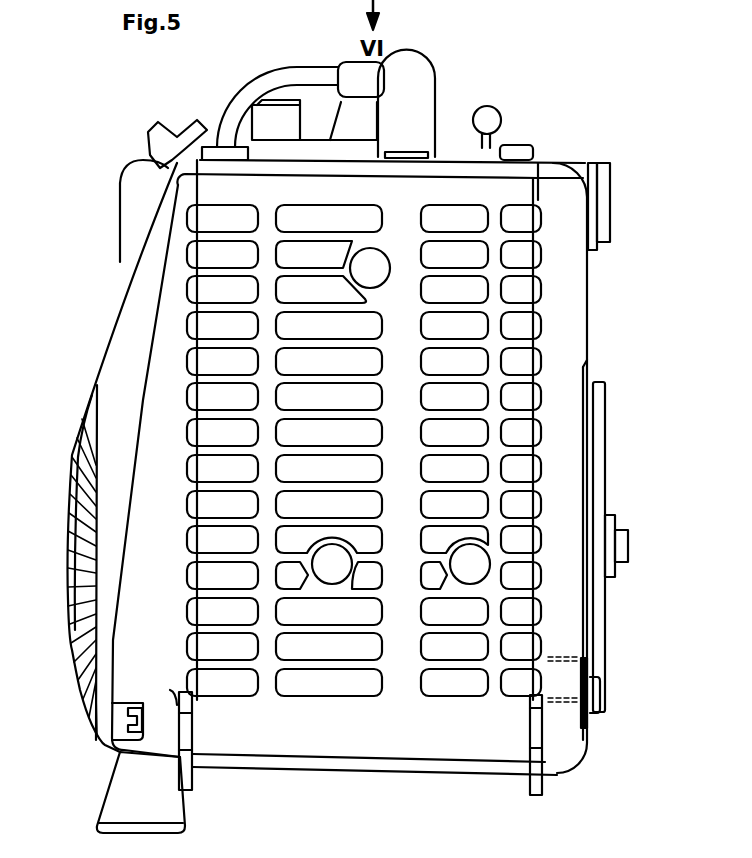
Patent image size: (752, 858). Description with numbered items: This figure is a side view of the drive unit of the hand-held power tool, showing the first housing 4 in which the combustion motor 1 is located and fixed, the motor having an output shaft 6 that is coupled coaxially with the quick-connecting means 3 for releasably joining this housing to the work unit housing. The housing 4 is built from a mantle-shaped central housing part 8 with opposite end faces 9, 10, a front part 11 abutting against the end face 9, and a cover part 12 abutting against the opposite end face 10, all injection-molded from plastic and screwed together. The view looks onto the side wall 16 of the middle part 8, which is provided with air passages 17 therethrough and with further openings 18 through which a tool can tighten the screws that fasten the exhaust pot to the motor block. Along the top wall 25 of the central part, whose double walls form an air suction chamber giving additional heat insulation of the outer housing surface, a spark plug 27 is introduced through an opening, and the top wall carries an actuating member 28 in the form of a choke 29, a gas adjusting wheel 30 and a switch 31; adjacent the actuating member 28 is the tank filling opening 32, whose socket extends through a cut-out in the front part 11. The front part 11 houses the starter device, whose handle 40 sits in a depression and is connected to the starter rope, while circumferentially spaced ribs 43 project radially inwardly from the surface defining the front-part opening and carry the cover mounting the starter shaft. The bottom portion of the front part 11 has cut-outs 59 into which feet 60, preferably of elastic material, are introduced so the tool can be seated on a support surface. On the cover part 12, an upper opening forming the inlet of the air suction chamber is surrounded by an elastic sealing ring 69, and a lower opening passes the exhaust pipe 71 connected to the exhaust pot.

The combustion motor 1 is at (375, 737).
The quick-connecting means 3 is at (606, 471).
The first housing 4 is at (162, 352).
The output shaft 6 is at (622, 578).
The central housing part 8 is at (430, 745).
The end face 9 is at (192, 715).
The end face 10 is at (530, 735).
The front part 11 is at (120, 407).
The cover part 12 is at (565, 355).
The side wall 16 is at (523, 192).
The air passages 17 is at (480, 328).
The openings 18 is at (378, 270).
The top wall 25 is at (507, 143).
The spark plug 27 is at (418, 105).
The actuating member 28 is at (315, 120).
The choke 29 is at (265, 105).
The gas adjusting wheel 30 is at (355, 110).
The switch 31 is at (490, 118).
The tank filling opening 32 is at (185, 137).
The handle 40 is at (138, 183).
The ribs 43 is at (80, 445).
The cut-outs 59 is at (108, 748).
The feet 60 is at (130, 782).
The elastic sealing ring 69 is at (612, 198).
The exhaust pipe 71 is at (590, 682).